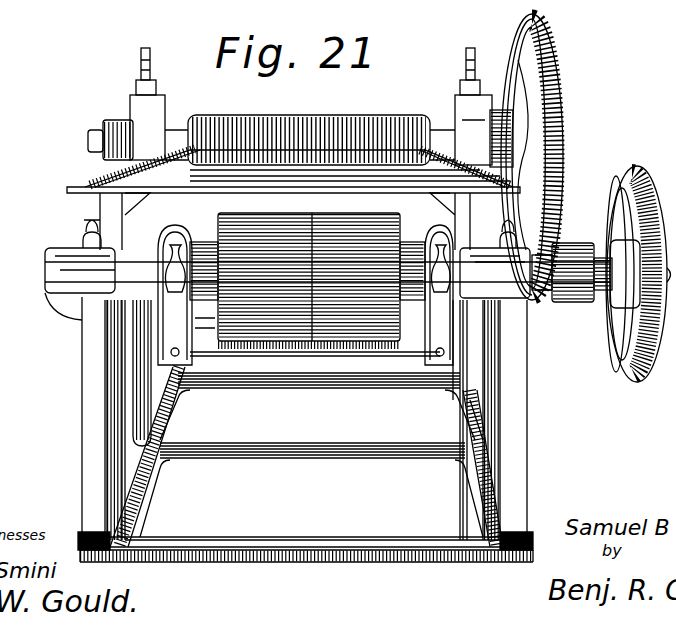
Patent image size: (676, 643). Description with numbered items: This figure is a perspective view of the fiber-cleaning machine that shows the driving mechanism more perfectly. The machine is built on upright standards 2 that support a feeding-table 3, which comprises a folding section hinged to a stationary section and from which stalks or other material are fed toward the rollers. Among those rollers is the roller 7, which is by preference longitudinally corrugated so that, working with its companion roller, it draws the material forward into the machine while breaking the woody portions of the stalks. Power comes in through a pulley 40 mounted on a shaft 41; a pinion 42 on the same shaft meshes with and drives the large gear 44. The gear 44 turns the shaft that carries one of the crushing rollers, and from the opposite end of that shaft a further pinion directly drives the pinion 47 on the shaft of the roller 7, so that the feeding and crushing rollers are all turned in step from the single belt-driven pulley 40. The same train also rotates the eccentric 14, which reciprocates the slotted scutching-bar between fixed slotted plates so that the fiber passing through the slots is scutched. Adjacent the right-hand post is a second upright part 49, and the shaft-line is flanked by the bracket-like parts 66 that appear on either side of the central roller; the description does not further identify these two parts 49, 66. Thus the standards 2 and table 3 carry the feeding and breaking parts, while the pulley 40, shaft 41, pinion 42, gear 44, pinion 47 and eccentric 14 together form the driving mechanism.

The standards 2 is at (289, 427).
The feeding-table 3 is at (293, 199).
The roller 7 is at (310, 129).
The eccentric 14 is at (198, 325).
The pulley 40 is at (327, 284).
The shaft 41 is at (600, 300).
The pinion 42 is at (578, 246).
The large gear 44 is at (555, 157).
The pinion 47 is at (126, 104).
The adjusting screw post 49 is at (455, 112).
The clamp 66 is at (437, 240).